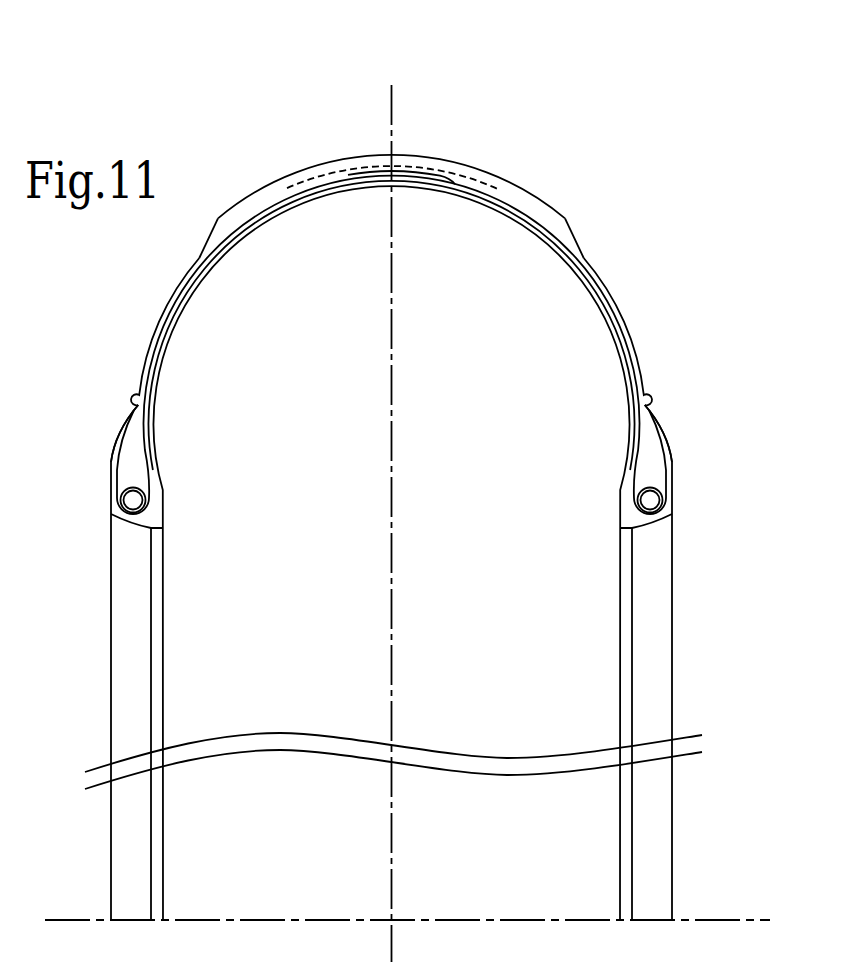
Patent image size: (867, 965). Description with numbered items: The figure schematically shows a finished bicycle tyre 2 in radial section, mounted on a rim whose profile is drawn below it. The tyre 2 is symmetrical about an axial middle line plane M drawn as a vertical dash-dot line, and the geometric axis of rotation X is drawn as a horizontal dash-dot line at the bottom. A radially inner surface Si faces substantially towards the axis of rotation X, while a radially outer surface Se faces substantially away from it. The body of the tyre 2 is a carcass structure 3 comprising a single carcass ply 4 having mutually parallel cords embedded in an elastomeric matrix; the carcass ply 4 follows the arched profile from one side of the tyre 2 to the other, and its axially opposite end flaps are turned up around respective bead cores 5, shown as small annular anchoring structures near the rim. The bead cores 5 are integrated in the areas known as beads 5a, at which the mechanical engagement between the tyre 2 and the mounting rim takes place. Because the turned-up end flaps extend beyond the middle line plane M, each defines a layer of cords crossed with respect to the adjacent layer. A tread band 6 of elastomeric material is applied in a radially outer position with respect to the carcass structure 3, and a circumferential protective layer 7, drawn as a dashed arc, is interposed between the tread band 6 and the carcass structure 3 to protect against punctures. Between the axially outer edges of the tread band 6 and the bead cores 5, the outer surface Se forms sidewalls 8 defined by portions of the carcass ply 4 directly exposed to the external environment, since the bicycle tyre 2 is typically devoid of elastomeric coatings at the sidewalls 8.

The tyre 2 is at (414, 464).
The carcass structure 3 is at (162, 437).
The carcass ply 4 is at (127, 460).
The bead core 5 is at (132, 500).
The bead 5a is at (680, 449).
The tread band 6 is at (521, 196).
The circumferential protective layer 7 is at (457, 174).
The sidewall 8 is at (152, 342).
The axial middle line plane M is at (392, 110).
The radially outer surface Se is at (577, 235).
The radially inner surface Si is at (523, 227).
The geometric axis of rotation X is at (762, 920).